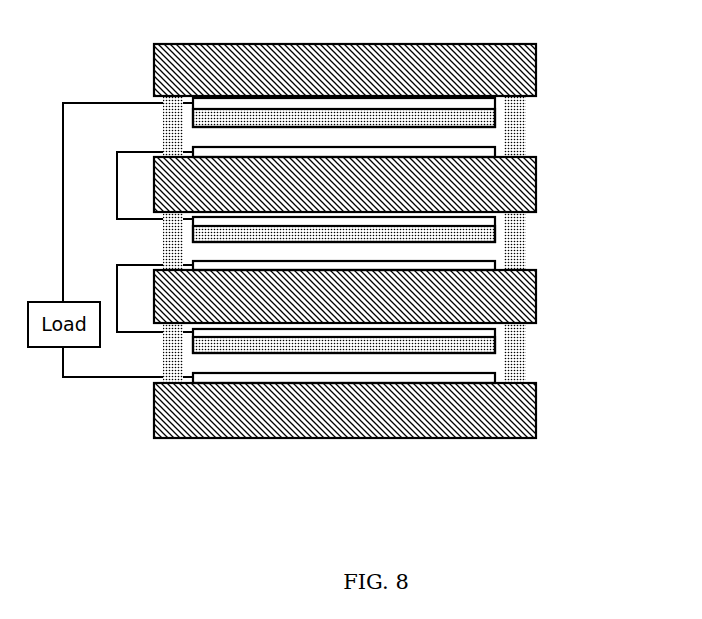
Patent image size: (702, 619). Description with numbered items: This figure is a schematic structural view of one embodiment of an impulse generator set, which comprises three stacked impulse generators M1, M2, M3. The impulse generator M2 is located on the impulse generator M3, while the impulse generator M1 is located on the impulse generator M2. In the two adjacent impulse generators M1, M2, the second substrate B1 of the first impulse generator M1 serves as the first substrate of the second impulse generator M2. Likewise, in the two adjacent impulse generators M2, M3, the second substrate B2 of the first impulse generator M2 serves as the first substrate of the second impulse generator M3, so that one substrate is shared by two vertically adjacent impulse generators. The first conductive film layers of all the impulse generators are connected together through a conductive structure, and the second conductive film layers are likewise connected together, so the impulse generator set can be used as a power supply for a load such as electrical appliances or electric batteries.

The impulse generator M1 is at (545, 52).
The second substrate B1 is at (522, 185).
The impulse generator M2 is at (545, 182).
The second substrate B2 is at (523, 313).
The impulse generator M3 is at (545, 310).